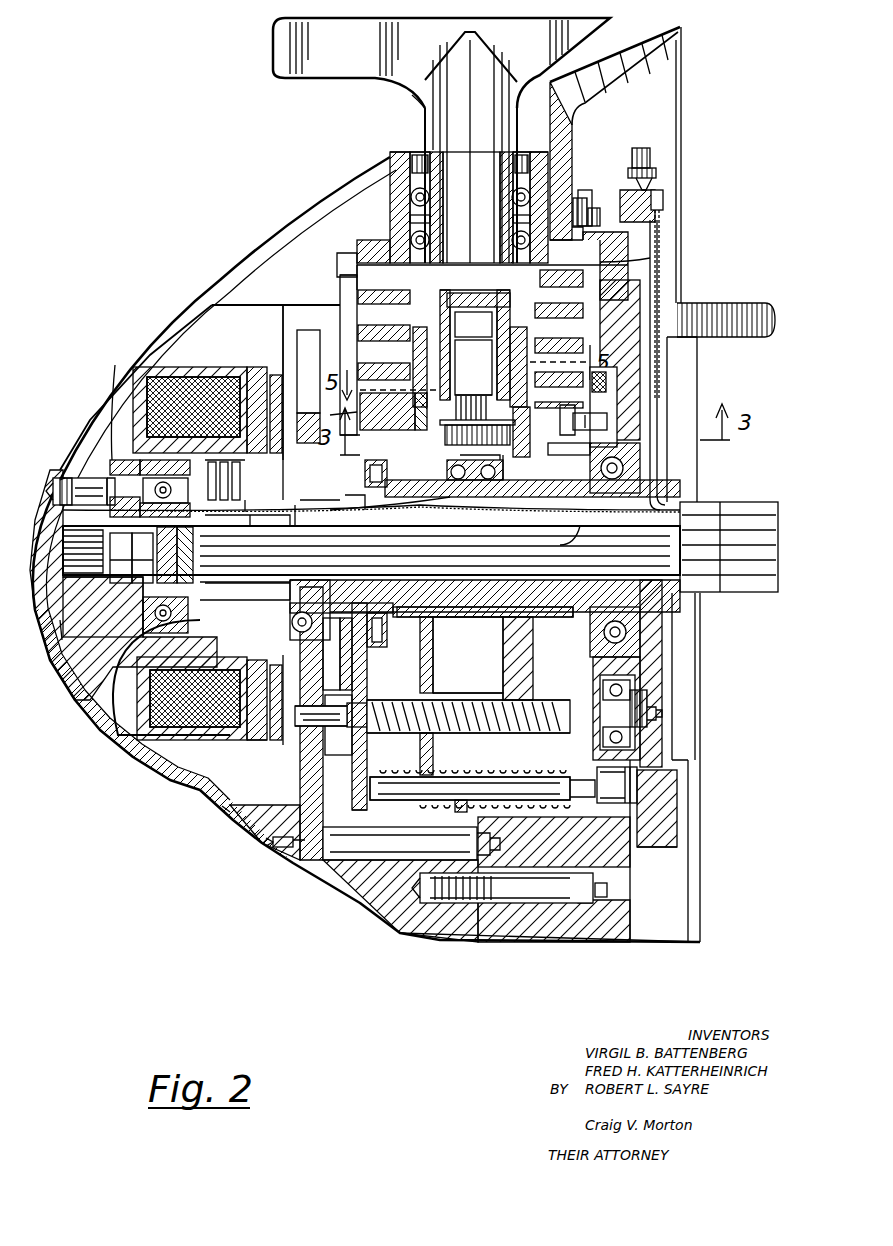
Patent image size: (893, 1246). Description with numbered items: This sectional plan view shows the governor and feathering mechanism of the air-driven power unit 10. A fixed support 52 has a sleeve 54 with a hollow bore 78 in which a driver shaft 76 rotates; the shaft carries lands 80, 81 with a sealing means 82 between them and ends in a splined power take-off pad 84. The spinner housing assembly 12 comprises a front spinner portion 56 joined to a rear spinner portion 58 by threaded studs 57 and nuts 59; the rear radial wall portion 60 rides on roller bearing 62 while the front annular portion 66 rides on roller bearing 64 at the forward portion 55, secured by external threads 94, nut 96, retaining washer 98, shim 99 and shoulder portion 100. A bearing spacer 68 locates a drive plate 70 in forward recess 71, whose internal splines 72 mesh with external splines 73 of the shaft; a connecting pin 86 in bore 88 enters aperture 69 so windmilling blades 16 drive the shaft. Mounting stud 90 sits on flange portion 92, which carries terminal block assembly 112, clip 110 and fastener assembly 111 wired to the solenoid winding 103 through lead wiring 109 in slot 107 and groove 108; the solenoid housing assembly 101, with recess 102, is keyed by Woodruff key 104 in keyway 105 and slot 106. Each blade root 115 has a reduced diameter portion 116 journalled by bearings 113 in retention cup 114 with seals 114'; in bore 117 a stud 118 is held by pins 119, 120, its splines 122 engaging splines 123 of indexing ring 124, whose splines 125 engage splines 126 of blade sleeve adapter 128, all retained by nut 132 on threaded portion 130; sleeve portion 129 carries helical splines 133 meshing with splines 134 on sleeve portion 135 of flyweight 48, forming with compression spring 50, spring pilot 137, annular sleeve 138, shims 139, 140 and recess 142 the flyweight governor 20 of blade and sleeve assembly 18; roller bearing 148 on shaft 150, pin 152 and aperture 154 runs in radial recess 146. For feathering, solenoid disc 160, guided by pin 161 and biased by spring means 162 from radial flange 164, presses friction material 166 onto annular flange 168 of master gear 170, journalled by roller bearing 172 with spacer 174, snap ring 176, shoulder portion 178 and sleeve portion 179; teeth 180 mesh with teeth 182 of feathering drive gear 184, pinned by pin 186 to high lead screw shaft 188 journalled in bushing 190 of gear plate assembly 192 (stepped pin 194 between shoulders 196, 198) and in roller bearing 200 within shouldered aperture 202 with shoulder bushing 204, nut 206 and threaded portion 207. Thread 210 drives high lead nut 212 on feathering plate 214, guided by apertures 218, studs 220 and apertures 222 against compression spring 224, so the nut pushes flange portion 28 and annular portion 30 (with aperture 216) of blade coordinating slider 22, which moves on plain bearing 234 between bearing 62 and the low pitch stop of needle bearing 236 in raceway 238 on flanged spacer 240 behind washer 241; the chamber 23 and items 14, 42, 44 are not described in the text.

The power unit 10 is at (190, 760).
The spinner housing assembly 12 is at (440, 940).
The cover 14 is at (550, 85).
The blades 16 is at (273, 42).
The blade and sleeve assembly 18 is at (400, 292).
The flyweight governor 20 is at (440, 320).
The blade coordinating slider 22 is at (450, 497).
The chamber 23 is at (498, 617).
The flange portion 28 is at (503, 660).
The annular portions 30 is at (525, 738).
The bearing race 42 is at (505, 485).
The bearing 44 is at (480, 485).
The flyweight 48 is at (345, 414).
The compression spring 50 is at (340, 340).
The fixed support 52 is at (662, 620).
The sleeve 54 is at (299, 539).
The forward portion 55 is at (143, 558).
The front spinner portion 56 is at (222, 808).
The threaded studs 57 is at (597, 208).
The rear spinner portion 58 is at (545, 932).
The nuts 59 is at (585, 190).
The radial wall portion 60 is at (675, 292).
The roller bearing 62 is at (590, 640).
The roller bearing 64 is at (150, 637).
The annular portion 66 is at (130, 660).
The bearing spacer 68 is at (130, 470).
The aperture 69 is at (108, 482).
The drive plate 70 is at (78, 482).
The forward recess 71 is at (60, 620).
The internal straight splines 72 is at (90, 560).
The external straight splines 73 is at (121, 558).
The driver shaft 76 is at (697, 595).
The longitudinal bore 78 is at (480, 535).
The land 80 is at (247, 534).
The land 81 is at (247, 569).
The sealing means 82 is at (175, 555).
The power take-off pad 84 is at (755, 528).
The connecting pin 86 is at (58, 535).
The longitudinal bore 88 is at (60, 485).
The mounting stud 90 is at (745, 310).
The mounting flange portion 92 is at (660, 800).
The external threads 94 is at (131, 565).
The nut 96 is at (98, 600).
The retaining washer 98 is at (158, 480).
The shim 99 is at (193, 407).
The annular shoulder portion 100 is at (225, 500).
The solenoid housing assembly 101 is at (222, 339).
The annular recess 102 is at (120, 400).
The solenoid winding 103 is at (225, 372).
The Woodruff key 104 is at (268, 544).
The keyway 105 is at (245, 587).
The slot 106 is at (245, 590).
The radially extending slot 107 is at (260, 500).
The longitudinal groove 108 is at (290, 500).
The lead wiring 109 is at (322, 500).
The terminal clip 110 is at (663, 198).
The nut, screw and washer assembly 111 is at (658, 178).
The terminal block assembly 112 is at (637, 165).
The bearings 113 is at (415, 240).
The bearing retention cup 114 is at (444, 145).
The seals 114' is at (450, 152).
The blade root 115 is at (435, 122).
The reduced diameter portion 116 is at (465, 190).
The longitudinal bore 117 is at (465, 315).
The stud 118 is at (559, 311).
The pin 119 is at (473, 338).
The pin 120 is at (468, 385).
The external straight splines 122 is at (481, 399).
The internal straight splines 123 is at (418, 410).
The indexing ring 124 is at (390, 432).
The external straight splines 125 is at (560, 385).
The internal straight splines 126 is at (533, 432).
The blade sleeve adapter 128 is at (400, 387).
The sleeve portion 129 is at (384, 372).
The threaded portion 130 is at (450, 440).
The nut 132 is at (455, 490).
The external helical splines 133 is at (450, 270).
The internal helical splines 134 is at (384, 333).
The sleeve portion 135 is at (420, 352).
The spring pilot 137 is at (380, 265).
The annular sleeve 138 is at (455, 250).
The shims 139 is at (583, 240).
The shims 140 is at (645, 275).
The annular recess 142 is at (612, 263).
The radial recess 146 is at (610, 372).
The roller bearing 148 is at (605, 400).
The shaft 150 is at (607, 422).
The pin 152 is at (567, 444).
The aperture 154 is at (597, 468).
The solenoid disc 160 is at (258, 742).
The pin 161 is at (250, 735).
The compression spring means 162 is at (192, 698).
The radial flange 164 is at (195, 698).
The friction material 166 is at (283, 745).
The annular flange 168 is at (278, 740).
The master gear 170 is at (275, 400).
The roller bearing 172 is at (340, 585).
The circular spacer 174 is at (305, 610).
The snap ring 176 is at (193, 407).
The radial shoulder portion 178 is at (340, 612).
The sleeve portion 179 is at (398, 607).
The external gear teeth 180 is at (338, 654).
The teeth 182 is at (352, 660).
The feathering drive gear 184 is at (367, 678).
The pin 186 is at (340, 730).
The high lead screw shaft 188 is at (370, 720).
The bushing 190 is at (355, 810).
The gear plate assembly 192 is at (283, 303).
The stepped pin 194 is at (345, 860).
The annular shoulder 196 is at (290, 850).
The shoulder 198 is at (460, 876).
The roller bearing 200 is at (603, 740).
The shouldered aperture 202 is at (610, 748).
The shoulder bushing 204 is at (603, 690).
The nut 206 is at (647, 705).
The threaded portion 207 is at (662, 715).
The high lead thread 210 is at (405, 730).
The high lead nut 212 is at (440, 690).
The feathering plate 214 is at (436, 758).
The aperture 216 is at (550, 690).
The apertures 218 is at (453, 806).
The studs 220 is at (530, 800).
The apertures 222 is at (620, 790).
The compression spring 224 is at (572, 805).
The plain bearing 234 is at (555, 540).
The needle bearing 236 is at (387, 470).
The raceway 238 is at (387, 630).
The flanged spacer 240 is at (365, 515).
The washer 241 is at (405, 500).